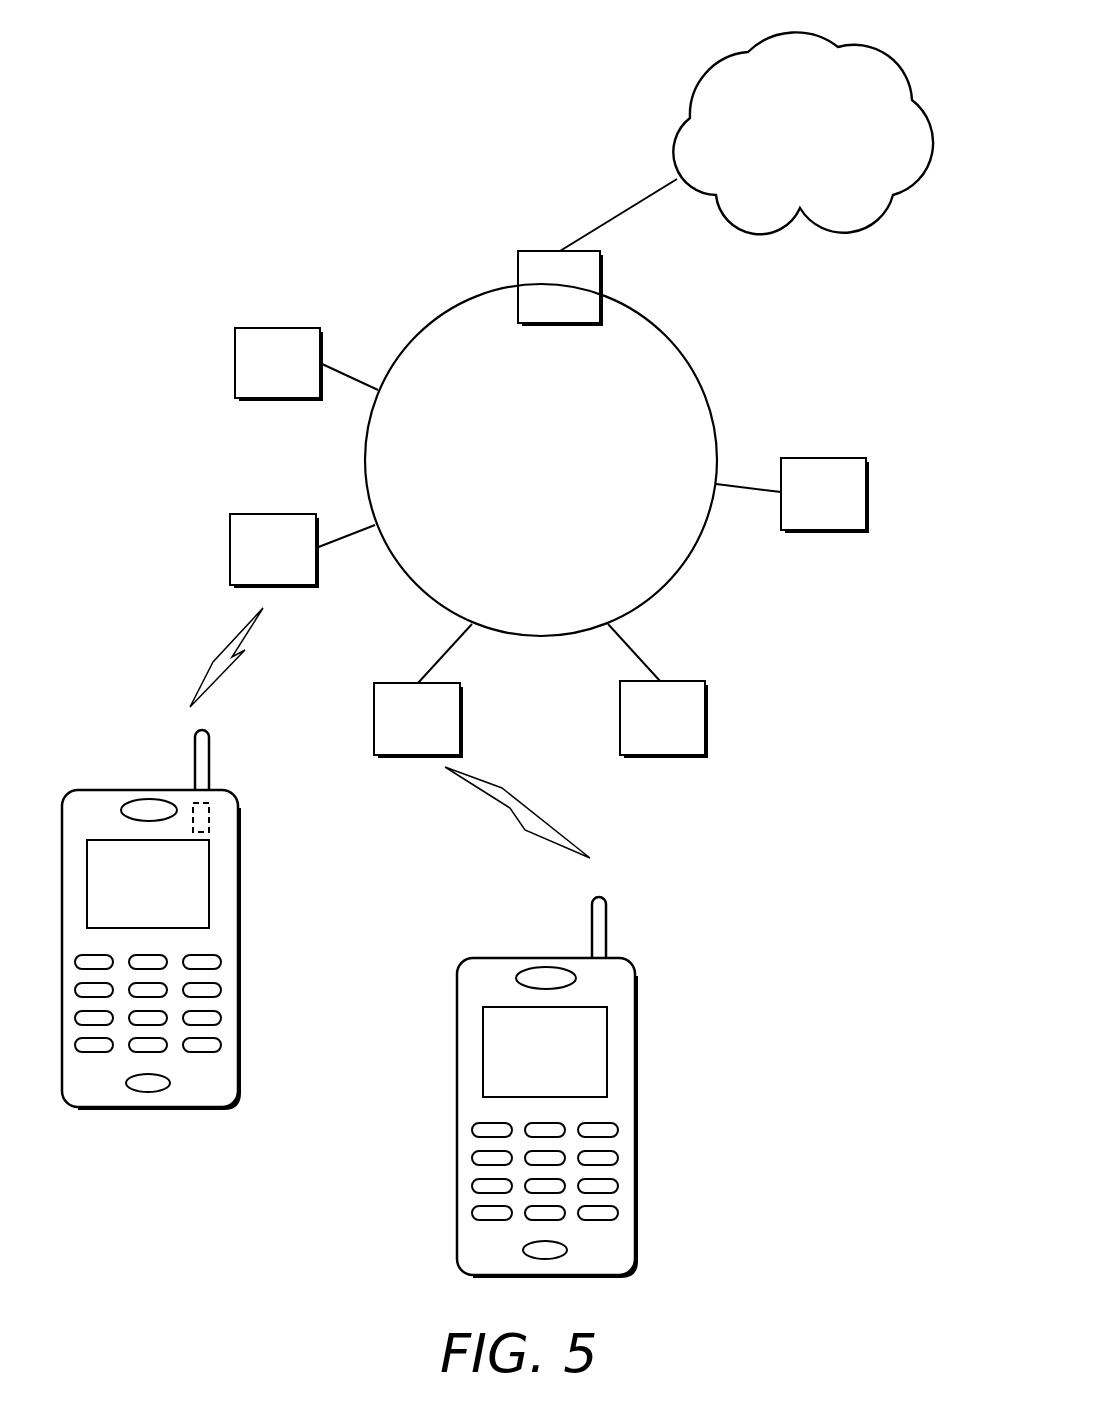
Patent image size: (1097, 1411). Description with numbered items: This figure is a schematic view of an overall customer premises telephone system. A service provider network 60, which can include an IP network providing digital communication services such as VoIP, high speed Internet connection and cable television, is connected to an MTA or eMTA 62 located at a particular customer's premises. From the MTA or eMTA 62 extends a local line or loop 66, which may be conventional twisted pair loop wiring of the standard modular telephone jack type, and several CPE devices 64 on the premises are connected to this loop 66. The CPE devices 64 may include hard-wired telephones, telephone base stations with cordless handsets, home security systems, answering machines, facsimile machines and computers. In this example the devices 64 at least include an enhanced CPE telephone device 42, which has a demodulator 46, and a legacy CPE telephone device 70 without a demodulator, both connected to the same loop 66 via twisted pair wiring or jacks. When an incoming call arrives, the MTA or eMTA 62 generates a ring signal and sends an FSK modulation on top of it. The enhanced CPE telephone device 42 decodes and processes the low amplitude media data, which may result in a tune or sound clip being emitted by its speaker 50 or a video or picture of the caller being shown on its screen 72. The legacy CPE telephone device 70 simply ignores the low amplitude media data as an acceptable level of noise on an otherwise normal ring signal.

The service provider network 60 is at (850, 40).
The MTA or eMTA 62 is at (604, 233).
The CPE devices 64 is at (297, 328).
The local line or loop 66 is at (676, 347).
The enhanced CPE telephone device 42 is at (181, 919).
The demodulator 46 is at (210, 818).
The speaker 50 is at (149, 799).
The legacy CPE telephone device 70 is at (636, 1218).
The screen 72 is at (209, 883).